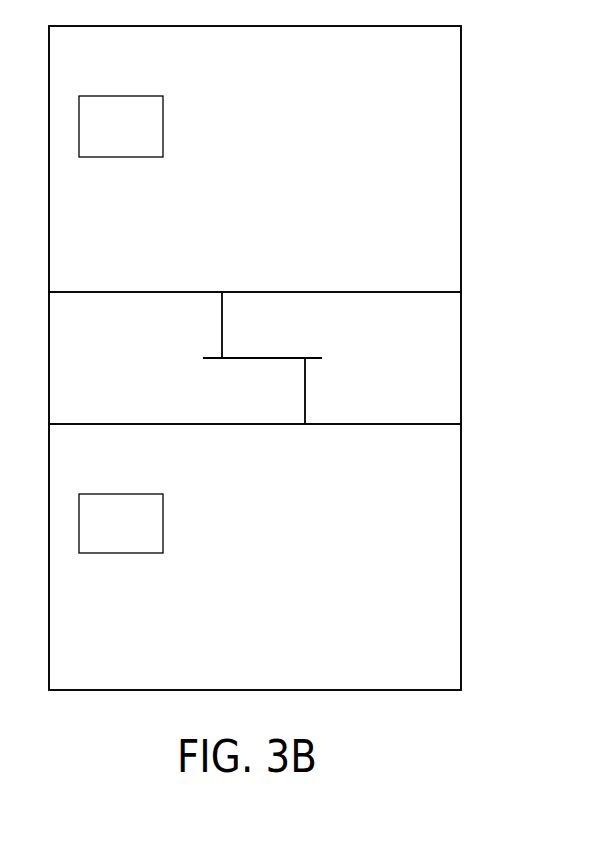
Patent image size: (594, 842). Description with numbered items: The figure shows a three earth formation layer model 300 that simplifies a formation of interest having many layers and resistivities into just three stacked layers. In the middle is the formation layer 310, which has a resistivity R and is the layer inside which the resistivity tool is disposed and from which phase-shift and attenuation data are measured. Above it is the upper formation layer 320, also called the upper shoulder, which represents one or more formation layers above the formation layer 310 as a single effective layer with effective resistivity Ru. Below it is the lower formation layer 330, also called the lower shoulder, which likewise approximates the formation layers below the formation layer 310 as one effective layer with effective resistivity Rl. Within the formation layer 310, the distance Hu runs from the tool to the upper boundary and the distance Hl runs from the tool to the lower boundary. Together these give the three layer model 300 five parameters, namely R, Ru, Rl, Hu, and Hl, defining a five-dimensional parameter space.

The three earth formation layer model 300 is at (492, 490).
The formation layer 310 is at (461, 345).
The upper formation layer 320 is at (461, 168).
The lower formation layer 330 is at (461, 568).